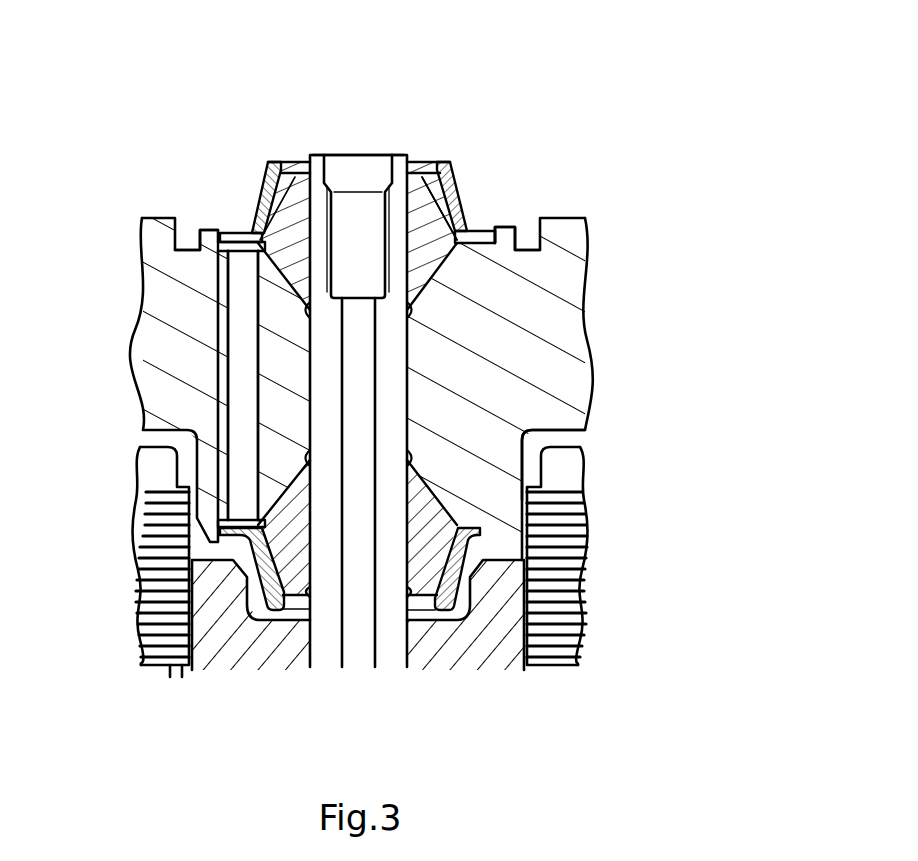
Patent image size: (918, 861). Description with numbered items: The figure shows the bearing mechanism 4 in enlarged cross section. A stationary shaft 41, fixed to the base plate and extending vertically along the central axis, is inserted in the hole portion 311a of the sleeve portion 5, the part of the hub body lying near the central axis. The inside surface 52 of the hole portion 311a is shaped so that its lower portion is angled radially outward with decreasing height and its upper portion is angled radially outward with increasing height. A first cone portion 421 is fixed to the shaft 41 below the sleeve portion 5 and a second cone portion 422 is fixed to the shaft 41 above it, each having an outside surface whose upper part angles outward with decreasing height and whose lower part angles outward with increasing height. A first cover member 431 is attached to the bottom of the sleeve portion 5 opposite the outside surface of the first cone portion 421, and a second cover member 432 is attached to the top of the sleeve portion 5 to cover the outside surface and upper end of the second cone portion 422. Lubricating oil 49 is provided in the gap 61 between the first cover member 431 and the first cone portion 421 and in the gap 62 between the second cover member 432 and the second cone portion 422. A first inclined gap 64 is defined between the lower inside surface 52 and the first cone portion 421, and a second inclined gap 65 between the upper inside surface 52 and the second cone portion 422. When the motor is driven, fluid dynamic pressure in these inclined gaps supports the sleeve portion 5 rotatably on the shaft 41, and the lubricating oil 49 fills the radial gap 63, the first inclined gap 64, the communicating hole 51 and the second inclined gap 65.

The bearing mechanism 4 is at (210, 67).
The sleeve portion 5 is at (497, 275).
The shaft 41 is at (395, 637).
The lubricating oil 49 is at (232, 232).
The communicating hole 51 is at (231, 373).
The inside surface 52 is at (427, 303).
The gap 61 is at (283, 590).
The gap 62 is at (268, 163).
The radial gap 63 is at (530, 428).
The first inclined gap 64 is at (444, 489).
The second inclined gap 65 is at (414, 370).
The hole portion 311a is at (422, 222).
The first cone portion 421 is at (302, 615).
The second cone portion 422 is at (302, 160).
The first cover member 431 is at (262, 622).
The second cover member 432 is at (203, 225).